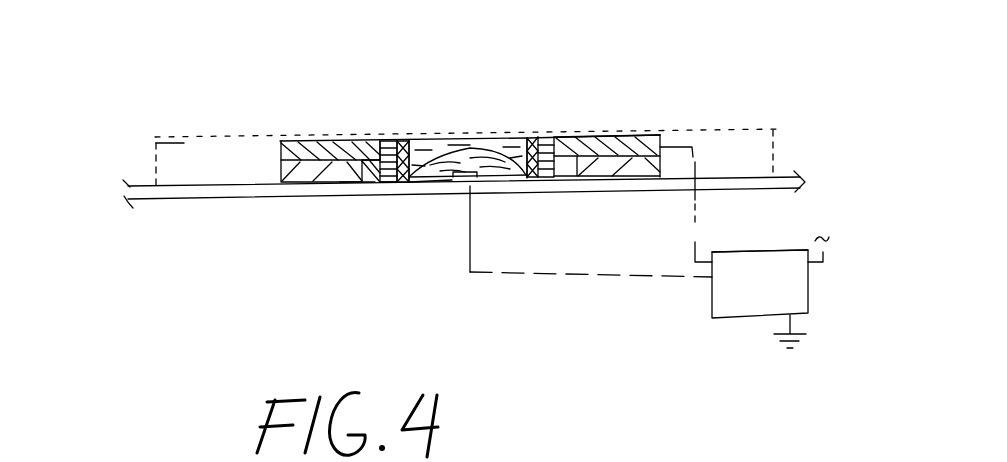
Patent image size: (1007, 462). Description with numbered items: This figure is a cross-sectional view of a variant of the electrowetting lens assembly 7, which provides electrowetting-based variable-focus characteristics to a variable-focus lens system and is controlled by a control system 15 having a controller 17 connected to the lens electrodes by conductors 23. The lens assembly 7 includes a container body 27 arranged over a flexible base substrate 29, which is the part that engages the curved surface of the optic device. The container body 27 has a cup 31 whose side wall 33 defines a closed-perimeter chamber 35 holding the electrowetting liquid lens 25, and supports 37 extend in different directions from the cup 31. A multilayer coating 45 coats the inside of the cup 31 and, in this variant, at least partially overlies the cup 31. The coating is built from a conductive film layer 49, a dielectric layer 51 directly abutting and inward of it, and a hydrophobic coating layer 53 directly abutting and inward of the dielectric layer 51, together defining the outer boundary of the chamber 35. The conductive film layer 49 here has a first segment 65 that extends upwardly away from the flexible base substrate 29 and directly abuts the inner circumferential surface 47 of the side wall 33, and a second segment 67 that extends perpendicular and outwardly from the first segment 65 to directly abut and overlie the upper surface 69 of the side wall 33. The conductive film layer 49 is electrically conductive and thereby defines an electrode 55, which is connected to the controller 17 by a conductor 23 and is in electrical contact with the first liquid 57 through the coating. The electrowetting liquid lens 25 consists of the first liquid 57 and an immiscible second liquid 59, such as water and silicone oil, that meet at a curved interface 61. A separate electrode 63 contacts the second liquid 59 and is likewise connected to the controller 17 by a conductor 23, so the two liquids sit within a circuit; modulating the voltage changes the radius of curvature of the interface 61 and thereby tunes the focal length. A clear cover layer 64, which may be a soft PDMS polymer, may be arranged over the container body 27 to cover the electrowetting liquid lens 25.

The lens assembly 7 is at (549, 97).
The control system 15 is at (748, 339).
The controller 17 is at (797, 291).
The conductor 23 is at (703, 220).
The electrowetting liquid lens 25 is at (429, 140).
The container body 27 is at (630, 118).
The flexible base substrate 29 is at (141, 187).
The cup 31 is at (358, 182).
The side wall 33 is at (334, 186).
The chamber 35 is at (520, 135).
The supports 37 is at (147, 160).
The multilayer coating 45 is at (395, 135).
The inner circumferential surface 47 is at (380, 186).
The conductive film layer 49 is at (380, 138).
The dielectric layer 51 is at (386, 136).
The hydrophobic coating layer 53 is at (405, 140).
The electrode 55 is at (662, 144).
The first liquid 57 is at (440, 137).
The second liquid 59 is at (434, 178).
The curved interface 61 is at (477, 138).
The electrode 63 is at (463, 180).
The clear cover layer 64 is at (744, 127).
The first segment 65 is at (392, 186).
The second segment 67 is at (331, 140).
The upper surface 69 is at (285, 142).